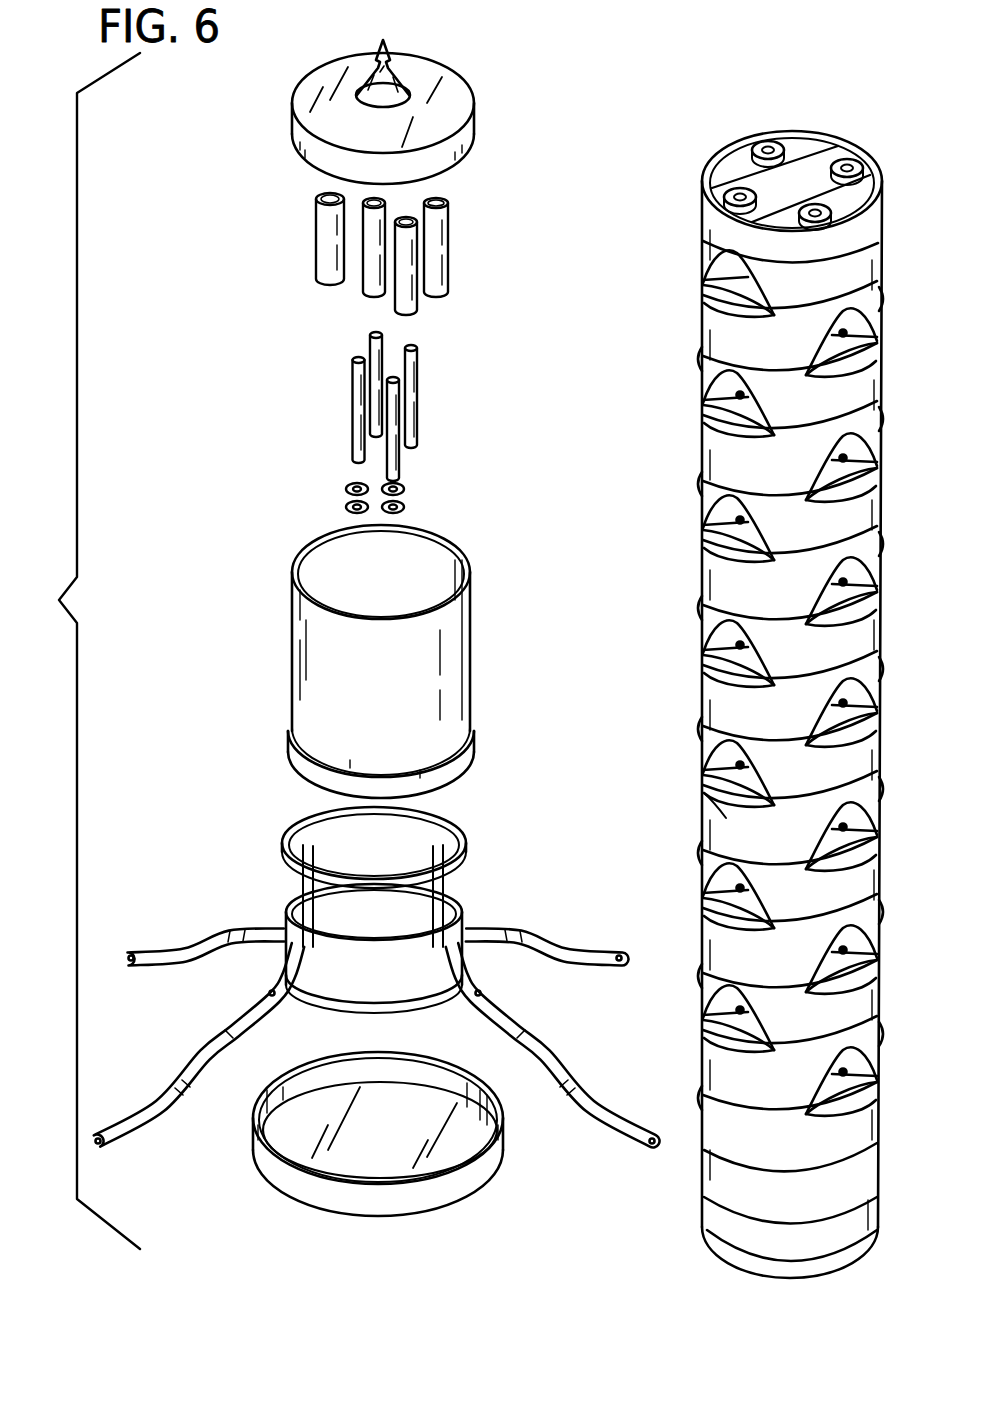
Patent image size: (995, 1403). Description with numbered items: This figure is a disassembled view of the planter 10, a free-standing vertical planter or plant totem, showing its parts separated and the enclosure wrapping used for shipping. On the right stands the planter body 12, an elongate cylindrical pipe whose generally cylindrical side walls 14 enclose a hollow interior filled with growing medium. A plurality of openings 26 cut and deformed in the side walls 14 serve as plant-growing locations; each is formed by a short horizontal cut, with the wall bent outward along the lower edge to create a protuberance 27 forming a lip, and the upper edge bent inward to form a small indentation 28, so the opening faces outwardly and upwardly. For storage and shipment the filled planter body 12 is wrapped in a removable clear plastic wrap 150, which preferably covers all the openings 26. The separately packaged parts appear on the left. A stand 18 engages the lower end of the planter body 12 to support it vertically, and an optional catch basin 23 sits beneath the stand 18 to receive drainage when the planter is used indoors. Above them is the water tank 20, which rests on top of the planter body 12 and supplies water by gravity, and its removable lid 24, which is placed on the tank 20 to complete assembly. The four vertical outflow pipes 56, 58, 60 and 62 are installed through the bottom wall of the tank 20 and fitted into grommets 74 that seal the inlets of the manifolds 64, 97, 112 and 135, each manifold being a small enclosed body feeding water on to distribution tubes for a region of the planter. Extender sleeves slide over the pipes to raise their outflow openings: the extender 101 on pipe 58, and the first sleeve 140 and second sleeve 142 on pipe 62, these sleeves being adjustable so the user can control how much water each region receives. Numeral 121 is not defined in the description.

The planter 10 is at (81, 651).
The planter body 12 is at (743, 659).
The side walls 14 is at (748, 468).
The stand 18 is at (462, 860).
The water tank 20 is at (470, 655).
The catch basin 23 is at (400, 1200).
The lid 24 is at (448, 90).
The openings 26 is at (714, 668).
The protuberance 27 is at (722, 818).
The indentation 28 is at (727, 754).
The outflow pipe 56 is at (417, 392).
The outflow pipe 58 is at (399, 462).
The outflow pipe 60 is at (370, 350).
The outflow pipe 62 is at (353, 420).
The water distribution manifold 64 is at (847, 160).
The grommet 74 is at (406, 508).
The manifold 97 is at (815, 205).
The extender 101 is at (447, 249).
The manifold 112 is at (766, 143).
The tube 121 is at (417, 297).
The manifold 135 is at (720, 196).
The first sleeve 140 is at (362, 283).
The second sleeve 142 is at (323, 242).
The plastic wrap 150 is at (747, 1168).